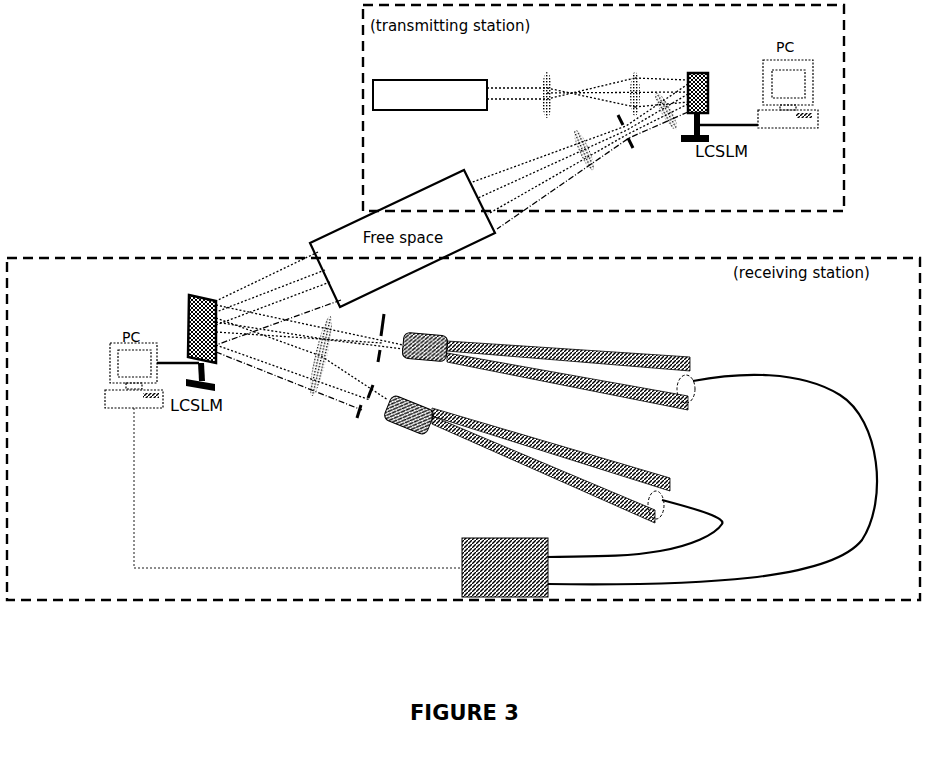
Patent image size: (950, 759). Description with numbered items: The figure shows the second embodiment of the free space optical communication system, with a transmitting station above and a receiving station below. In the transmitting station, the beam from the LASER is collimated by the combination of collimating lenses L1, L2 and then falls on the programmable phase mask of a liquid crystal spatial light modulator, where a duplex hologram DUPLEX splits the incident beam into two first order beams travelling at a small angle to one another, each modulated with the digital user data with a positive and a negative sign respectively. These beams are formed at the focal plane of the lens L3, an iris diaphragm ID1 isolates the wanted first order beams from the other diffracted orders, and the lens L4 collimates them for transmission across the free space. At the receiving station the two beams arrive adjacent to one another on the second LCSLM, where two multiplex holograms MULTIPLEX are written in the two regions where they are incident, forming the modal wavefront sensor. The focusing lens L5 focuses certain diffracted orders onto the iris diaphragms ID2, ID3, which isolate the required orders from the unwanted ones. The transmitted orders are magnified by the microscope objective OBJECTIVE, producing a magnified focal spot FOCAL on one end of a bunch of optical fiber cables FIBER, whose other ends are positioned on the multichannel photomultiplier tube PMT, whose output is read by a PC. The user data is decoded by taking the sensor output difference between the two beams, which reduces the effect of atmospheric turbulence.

The laser LASER is at (430, 95).
The collimating lens L1 is at (544, 83).
The collimating lens L2 is at (633, 82).
The lens L3 is at (665, 120).
The lens L4 is at (585, 159).
The focusing lens L5 is at (327, 356).
The iris diaphragm ID1 is at (636, 139).
The iris diaphragm ID2 is at (395, 336).
The iris diaphragm ID3 is at (382, 396).
The duplex hologram DUPLEX is at (698, 73).
The multiplex hologram MULTIPLEX is at (190, 340).
The microscope objective OBJECTIVE is at (430, 362).
The magnified focal spot FOCAL is at (651, 494).
The optical fiber cables FIBER is at (712, 479).
The multichannel photomultiplier tube PMT is at (475, 553).